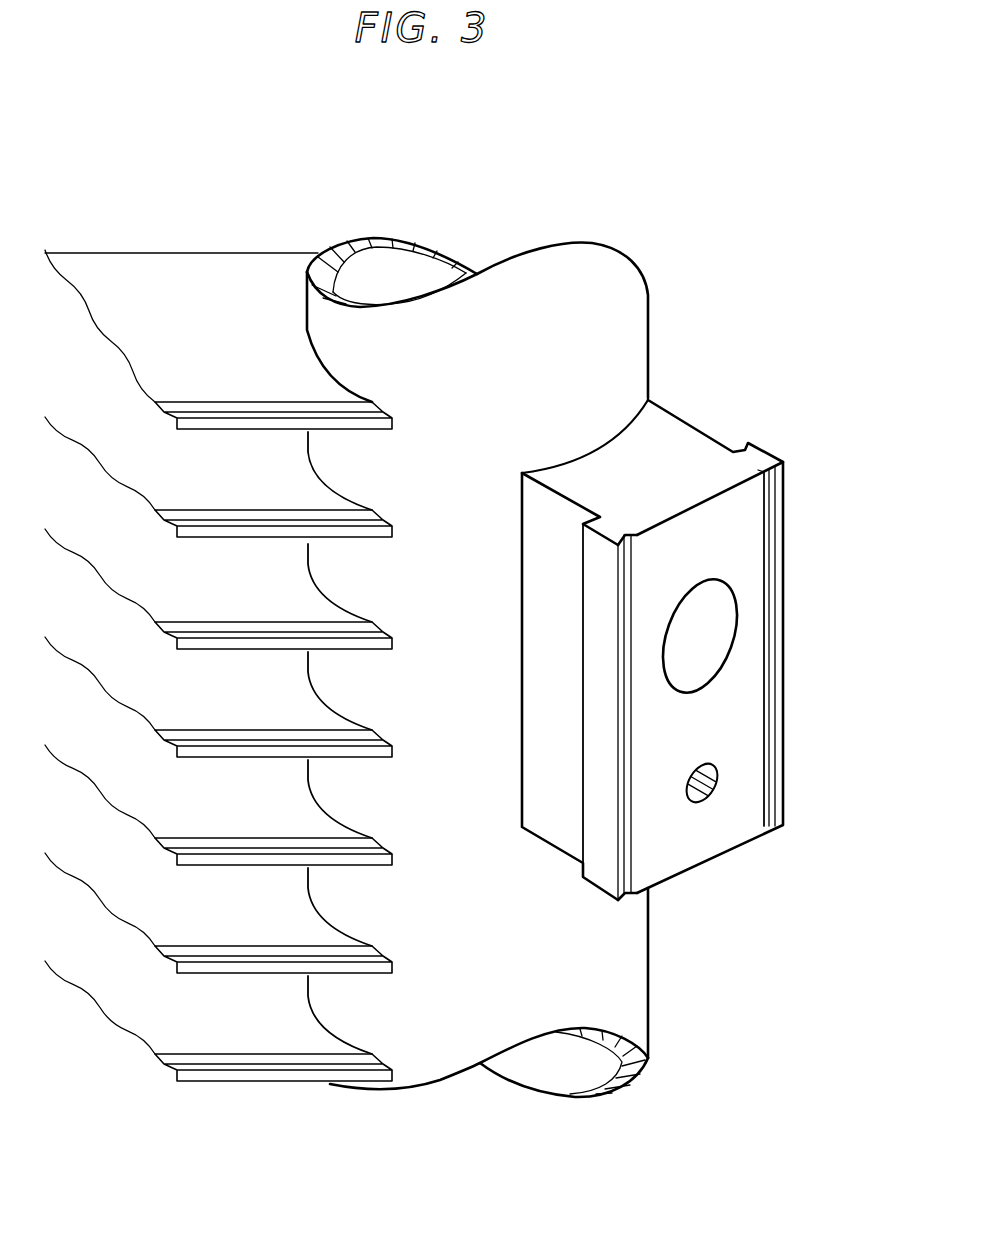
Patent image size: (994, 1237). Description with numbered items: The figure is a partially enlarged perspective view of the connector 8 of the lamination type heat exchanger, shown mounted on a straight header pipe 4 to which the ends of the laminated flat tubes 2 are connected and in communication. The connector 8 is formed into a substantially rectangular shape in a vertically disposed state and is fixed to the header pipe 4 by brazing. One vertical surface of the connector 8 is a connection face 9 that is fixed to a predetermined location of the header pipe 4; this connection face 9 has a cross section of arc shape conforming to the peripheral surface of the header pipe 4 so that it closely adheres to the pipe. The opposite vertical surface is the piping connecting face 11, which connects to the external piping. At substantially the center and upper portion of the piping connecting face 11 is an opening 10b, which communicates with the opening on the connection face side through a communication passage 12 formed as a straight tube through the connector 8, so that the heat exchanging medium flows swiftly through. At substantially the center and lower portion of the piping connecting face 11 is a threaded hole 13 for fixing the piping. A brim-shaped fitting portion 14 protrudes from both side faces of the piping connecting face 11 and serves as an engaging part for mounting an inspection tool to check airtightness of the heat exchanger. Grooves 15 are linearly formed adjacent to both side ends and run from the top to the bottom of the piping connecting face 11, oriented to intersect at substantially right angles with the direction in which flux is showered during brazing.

The flat tube 2 is at (237, 272).
The header pipe 4 is at (664, 276).
The connector 8 is at (644, 633).
The connection face 9 is at (590, 438).
The opening 10b is at (740, 602).
The piping connecting face 11 is at (735, 537).
The communication passage 12 is at (702, 648).
The threaded hole 13 is at (700, 797).
The fitting portion 14 is at (745, 447).
The groove 15 is at (633, 723).